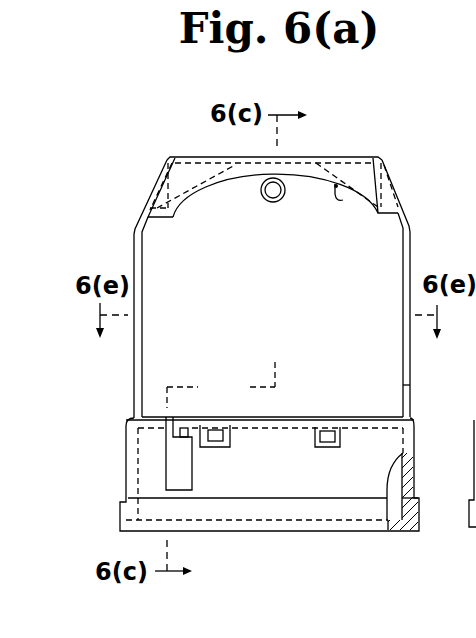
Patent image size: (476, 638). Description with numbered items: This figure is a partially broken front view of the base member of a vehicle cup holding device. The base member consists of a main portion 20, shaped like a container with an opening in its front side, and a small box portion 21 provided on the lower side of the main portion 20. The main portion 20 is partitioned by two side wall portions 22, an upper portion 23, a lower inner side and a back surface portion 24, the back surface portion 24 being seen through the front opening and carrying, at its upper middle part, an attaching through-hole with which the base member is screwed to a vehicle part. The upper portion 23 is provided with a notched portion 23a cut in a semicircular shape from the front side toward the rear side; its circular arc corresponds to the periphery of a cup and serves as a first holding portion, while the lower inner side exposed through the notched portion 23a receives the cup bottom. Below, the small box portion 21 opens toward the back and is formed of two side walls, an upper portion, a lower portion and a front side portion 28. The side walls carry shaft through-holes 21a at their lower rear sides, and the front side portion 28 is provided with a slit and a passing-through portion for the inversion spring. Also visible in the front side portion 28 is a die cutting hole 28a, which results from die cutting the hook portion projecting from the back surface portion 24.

The main portion 20 is at (126, 383).
The small box portion 21 is at (118, 465).
The shaft through-hole 21a is at (418, 512).
The side wall portion 22 is at (135, 252).
The upper portion 23 is at (182, 153).
The notched portion 23a is at (336, 203).
The back surface portion 24 is at (475, 232).
The front side portion 28 is at (263, 478).
The die cutting hole 28a is at (333, 447).